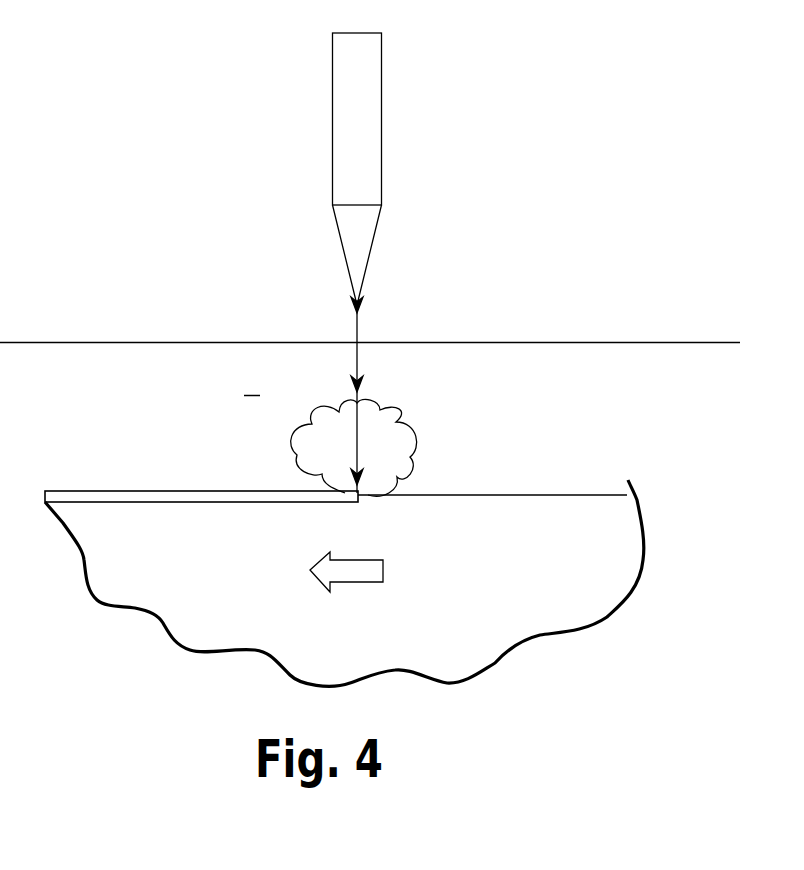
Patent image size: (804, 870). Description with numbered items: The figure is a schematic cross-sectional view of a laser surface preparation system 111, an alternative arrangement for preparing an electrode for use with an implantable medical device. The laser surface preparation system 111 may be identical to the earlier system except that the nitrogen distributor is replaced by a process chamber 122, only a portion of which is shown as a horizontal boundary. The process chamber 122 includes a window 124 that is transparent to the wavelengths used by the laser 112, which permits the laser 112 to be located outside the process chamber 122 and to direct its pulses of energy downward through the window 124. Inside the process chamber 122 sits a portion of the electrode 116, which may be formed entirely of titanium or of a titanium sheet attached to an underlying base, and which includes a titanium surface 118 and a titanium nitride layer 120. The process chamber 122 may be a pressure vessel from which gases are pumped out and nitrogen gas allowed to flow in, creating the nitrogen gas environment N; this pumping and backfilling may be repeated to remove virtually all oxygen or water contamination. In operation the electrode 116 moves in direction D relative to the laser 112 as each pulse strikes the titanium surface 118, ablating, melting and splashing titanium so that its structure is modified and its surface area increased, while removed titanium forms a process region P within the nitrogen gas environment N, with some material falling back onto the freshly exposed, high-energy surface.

The laser surface preparation system 111 is at (66, 96).
The laser 112 is at (382, 67).
The electrode 116 is at (607, 531).
The titanium surface 118 is at (586, 494).
The titanium nitride layer 120 is at (252, 490).
The process chamber 122 is at (80, 342).
The window 124 is at (338, 343).
The process region P is at (421, 420).
The nitrogen gas environment N is at (253, 384).
The direction D is at (360, 572).